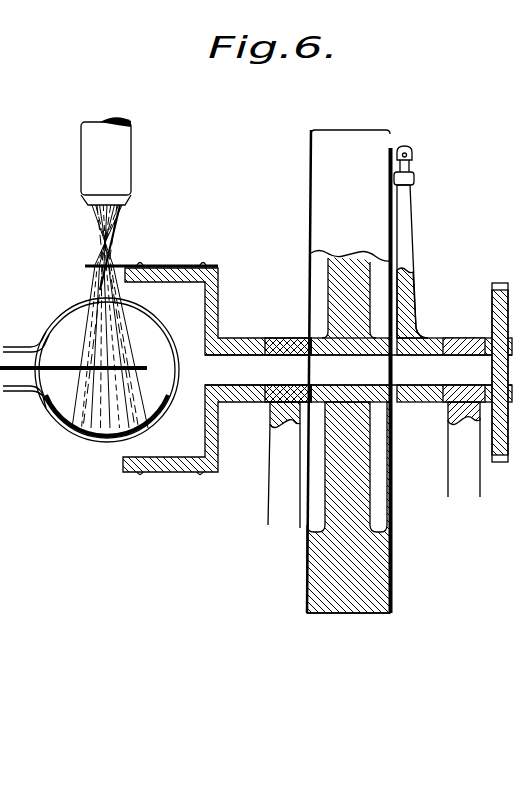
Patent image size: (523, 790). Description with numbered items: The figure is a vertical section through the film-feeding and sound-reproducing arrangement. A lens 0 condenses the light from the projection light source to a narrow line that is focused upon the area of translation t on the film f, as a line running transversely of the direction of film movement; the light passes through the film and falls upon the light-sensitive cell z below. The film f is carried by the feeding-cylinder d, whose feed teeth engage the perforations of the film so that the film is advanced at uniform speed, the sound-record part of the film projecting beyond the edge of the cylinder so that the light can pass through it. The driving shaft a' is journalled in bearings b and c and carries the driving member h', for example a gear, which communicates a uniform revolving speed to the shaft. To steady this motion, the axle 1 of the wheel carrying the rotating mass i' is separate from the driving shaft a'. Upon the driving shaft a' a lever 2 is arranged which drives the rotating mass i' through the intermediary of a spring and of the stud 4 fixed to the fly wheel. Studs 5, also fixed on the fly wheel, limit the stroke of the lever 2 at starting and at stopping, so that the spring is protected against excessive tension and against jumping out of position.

The lens 0 is at (127, 172).
The area of translation t is at (90, 264).
The film f is at (163, 266).
The feeding-cylinder d is at (166, 472).
The cell z is at (55, 318).
The axle 1 is at (268, 368).
The driving shaft a' is at (383, 435).
The rotating mass i' is at (334, 371).
The bearing c is at (272, 458).
The bearing b is at (448, 452).
The lever 2 is at (411, 253).
The stud 4 is at (416, 163).
The studs 5 is at (416, 183).
The driving member h' is at (498, 357).